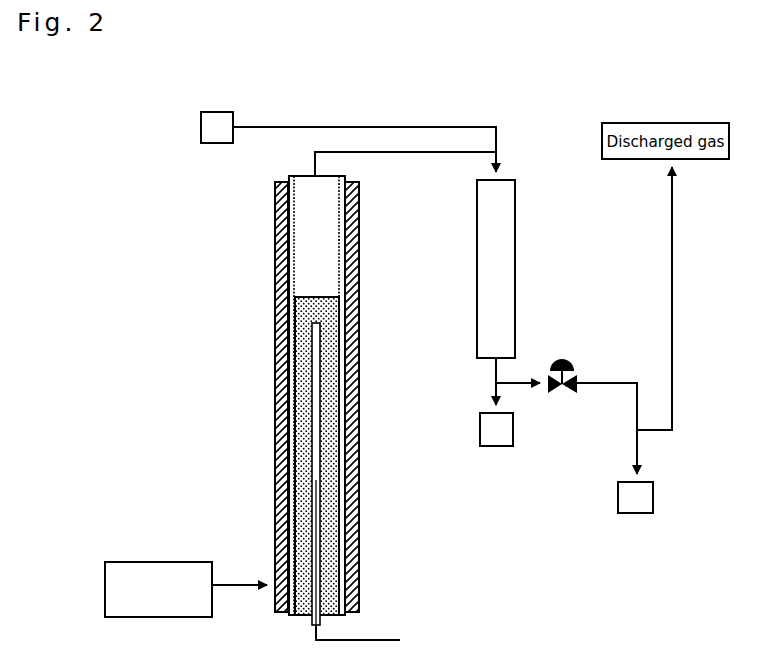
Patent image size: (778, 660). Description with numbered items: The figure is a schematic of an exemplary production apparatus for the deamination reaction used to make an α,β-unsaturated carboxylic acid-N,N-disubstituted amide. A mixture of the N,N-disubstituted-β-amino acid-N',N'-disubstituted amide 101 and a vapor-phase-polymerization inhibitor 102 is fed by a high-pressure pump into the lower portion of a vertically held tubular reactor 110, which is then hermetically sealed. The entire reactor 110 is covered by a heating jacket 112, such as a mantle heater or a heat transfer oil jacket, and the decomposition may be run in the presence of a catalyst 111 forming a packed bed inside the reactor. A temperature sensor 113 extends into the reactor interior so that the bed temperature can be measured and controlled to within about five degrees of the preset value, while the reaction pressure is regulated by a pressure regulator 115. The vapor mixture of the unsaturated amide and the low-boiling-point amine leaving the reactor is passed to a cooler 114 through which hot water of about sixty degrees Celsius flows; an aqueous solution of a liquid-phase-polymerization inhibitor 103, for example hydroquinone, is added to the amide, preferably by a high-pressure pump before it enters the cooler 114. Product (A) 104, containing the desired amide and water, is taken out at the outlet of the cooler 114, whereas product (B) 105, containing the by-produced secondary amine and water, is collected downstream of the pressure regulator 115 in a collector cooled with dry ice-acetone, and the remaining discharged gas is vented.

The N,N-disubstituted-β-amino acid-N',N'-disubstituted amide 101 is at (186, 589).
The vapor-phase-polymerization inhibitor 102 is at (186, 589).
The liquid-phase-polymerization inhibitor 103 is at (348, 142).
The product (A) 104 is at (496, 429).
The product (B) 105 is at (635, 497).
The reactor 110 is at (266, 214).
The catalyst 111 is at (300, 352).
The heating jacket 112 is at (282, 397).
The temperature sensor 113 is at (317, 475).
The cooler 114 is at (497, 270).
The pressure regulator 115 is at (565, 357).